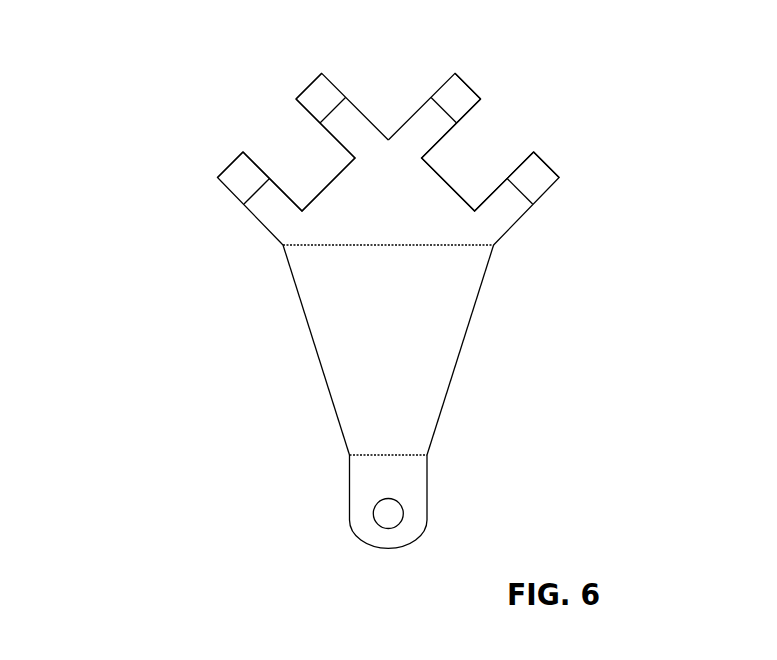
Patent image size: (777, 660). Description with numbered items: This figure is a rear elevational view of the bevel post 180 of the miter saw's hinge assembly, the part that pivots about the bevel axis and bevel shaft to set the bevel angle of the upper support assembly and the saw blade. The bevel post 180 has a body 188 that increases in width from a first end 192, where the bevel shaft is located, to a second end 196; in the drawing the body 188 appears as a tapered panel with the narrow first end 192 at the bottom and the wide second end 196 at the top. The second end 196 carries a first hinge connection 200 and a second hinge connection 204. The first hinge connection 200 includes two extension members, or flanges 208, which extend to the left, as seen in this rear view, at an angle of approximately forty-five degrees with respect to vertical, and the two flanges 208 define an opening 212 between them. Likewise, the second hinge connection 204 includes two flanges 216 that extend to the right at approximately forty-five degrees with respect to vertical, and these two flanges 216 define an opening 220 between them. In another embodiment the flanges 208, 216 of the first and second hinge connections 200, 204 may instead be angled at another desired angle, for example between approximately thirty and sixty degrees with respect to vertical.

The bevel post 180 is at (315, 350).
The body 188 is at (458, 332).
The first end 192 is at (358, 473).
The second end 196 is at (378, 217).
The first hinge connection 200 is at (190, 166).
The second hinge connection 204 is at (570, 169).
The flanges 208 is at (320, 104).
The opening 212 is at (297, 157).
The flanges 216 is at (447, 95).
The opening 220 is at (480, 153).